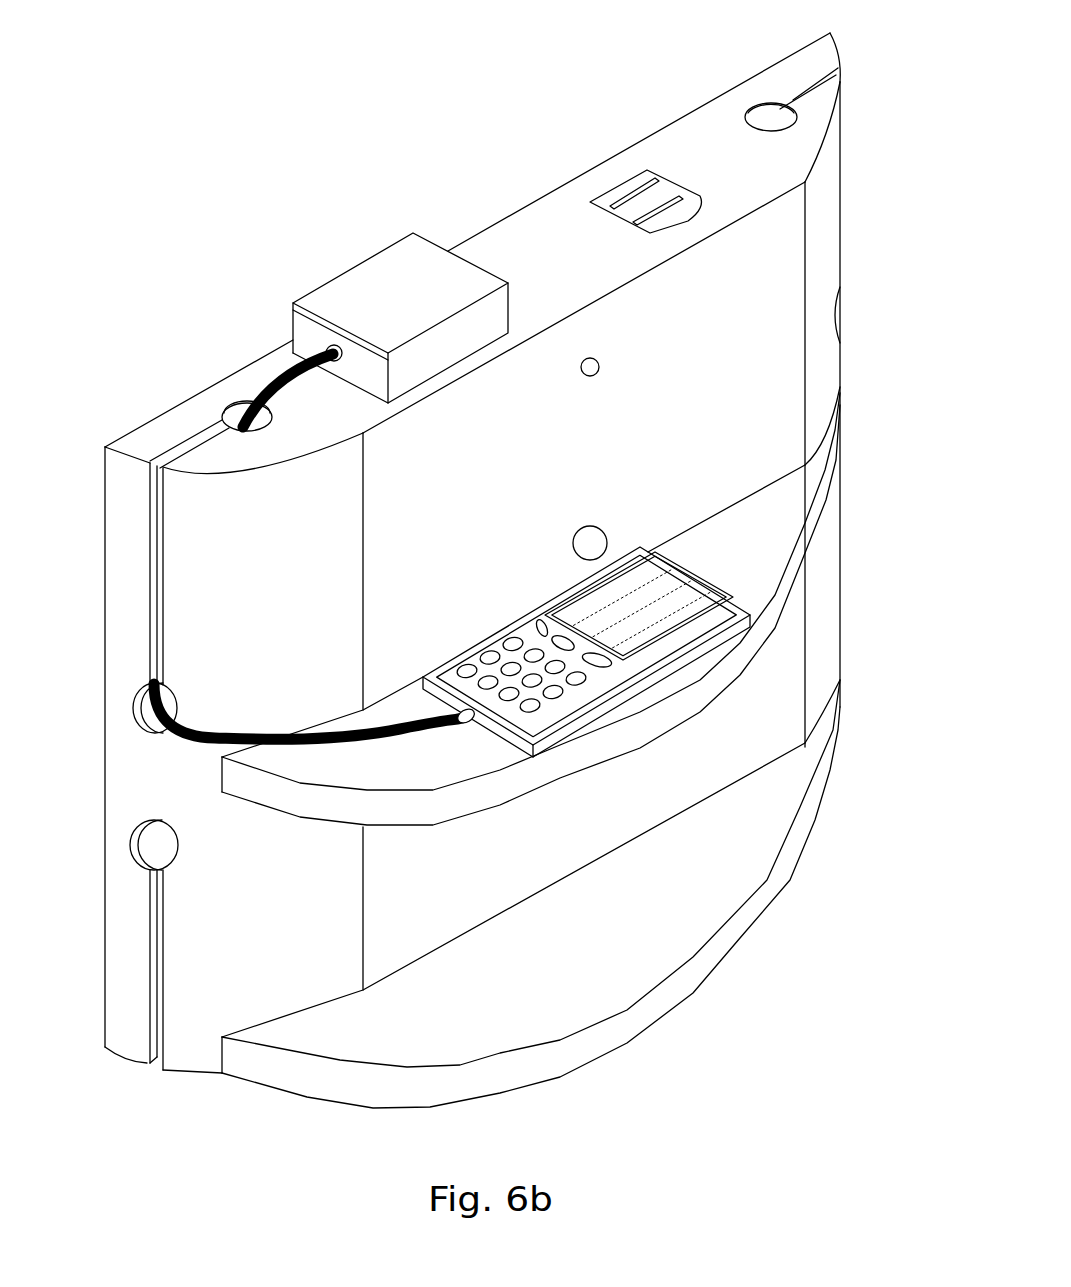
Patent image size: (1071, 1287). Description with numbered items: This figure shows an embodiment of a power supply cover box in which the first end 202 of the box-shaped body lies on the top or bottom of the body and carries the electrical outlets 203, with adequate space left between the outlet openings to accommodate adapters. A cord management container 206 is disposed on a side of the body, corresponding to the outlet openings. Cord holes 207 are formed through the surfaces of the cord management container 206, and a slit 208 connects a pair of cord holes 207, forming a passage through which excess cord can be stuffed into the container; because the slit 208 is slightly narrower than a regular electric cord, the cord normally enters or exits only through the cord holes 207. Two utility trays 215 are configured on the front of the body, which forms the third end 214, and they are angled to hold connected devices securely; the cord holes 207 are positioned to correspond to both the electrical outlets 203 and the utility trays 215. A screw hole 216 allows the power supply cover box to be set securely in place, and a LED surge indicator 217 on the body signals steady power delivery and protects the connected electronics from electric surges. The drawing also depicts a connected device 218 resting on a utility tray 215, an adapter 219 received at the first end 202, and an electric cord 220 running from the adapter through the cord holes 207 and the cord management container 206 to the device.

The first end 202 is at (683, 140).
The electrical outlet 203 is at (627, 193).
The cord management container 206 is at (827, 200).
The cord hole 207 is at (238, 417).
The slit 208 is at (160, 573).
The third end 214 is at (497, 870).
The utility tray 215 is at (800, 483).
The screw hole 216 is at (590, 543).
The LED surge indicator 217 is at (588, 358).
The mobile phone 218 is at (697, 632).
The power adapter 219 is at (410, 287).
The cable 220 is at (288, 368).